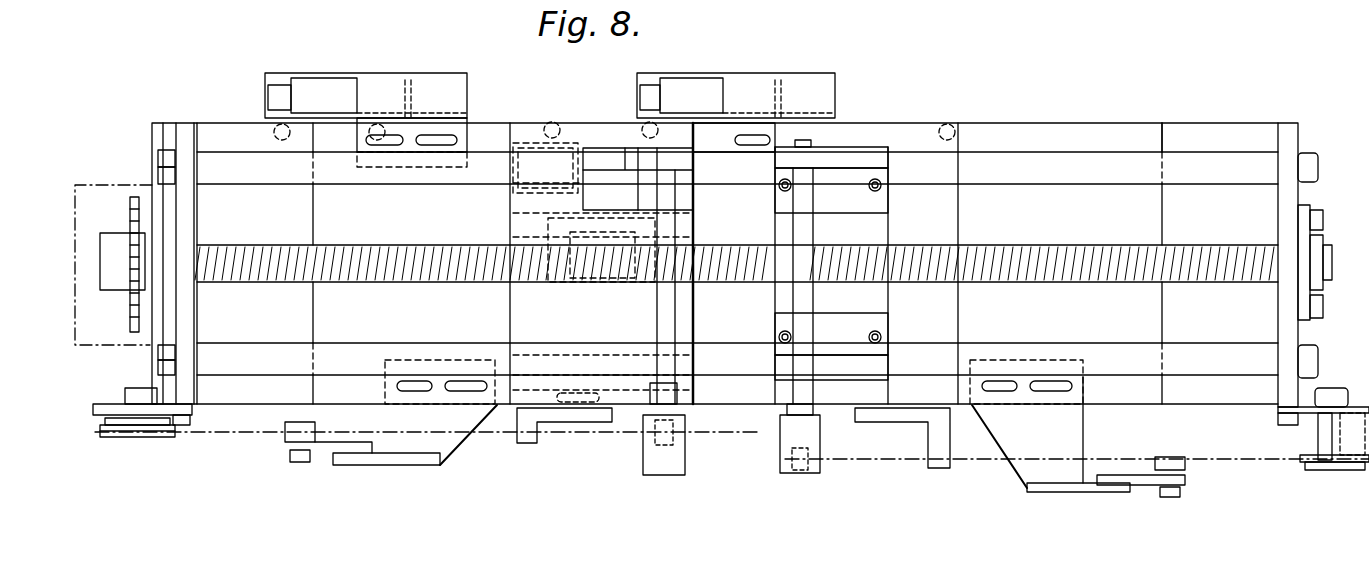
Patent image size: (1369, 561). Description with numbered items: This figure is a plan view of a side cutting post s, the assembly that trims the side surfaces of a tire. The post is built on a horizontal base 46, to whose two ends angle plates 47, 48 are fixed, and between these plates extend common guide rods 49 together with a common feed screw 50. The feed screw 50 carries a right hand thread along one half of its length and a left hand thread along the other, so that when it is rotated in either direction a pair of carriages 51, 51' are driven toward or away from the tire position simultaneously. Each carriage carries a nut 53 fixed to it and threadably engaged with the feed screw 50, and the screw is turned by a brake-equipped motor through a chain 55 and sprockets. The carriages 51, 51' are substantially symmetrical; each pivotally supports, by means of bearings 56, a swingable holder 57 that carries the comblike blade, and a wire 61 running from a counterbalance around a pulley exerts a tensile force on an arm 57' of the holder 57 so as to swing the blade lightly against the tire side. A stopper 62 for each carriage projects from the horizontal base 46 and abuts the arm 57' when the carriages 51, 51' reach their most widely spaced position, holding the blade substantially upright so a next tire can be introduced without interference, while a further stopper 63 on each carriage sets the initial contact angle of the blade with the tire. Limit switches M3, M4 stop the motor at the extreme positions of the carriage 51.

The horizontal base 46 is at (1110, 135).
The angle plate 47 is at (222, 132).
The angle plate 48 is at (1220, 132).
The common guide rods 49 is at (1214, 178).
The common feed screw 50 is at (1078, 248).
The carriage 51 is at (578, 263).
The carriage 51' is at (957, 263).
The nut 53 is at (575, 293).
The chain 55 is at (134, 332).
The bearings 56 is at (822, 160).
The swingable holder 57 is at (731, 442).
The arm 57' is at (836, 474).
The wire 61 is at (226, 432).
The stopper 62 is at (308, 445).
The further stopper 63 is at (527, 432).
The limit switch M3 is at (298, 90).
The limit switch M4 is at (688, 90).
The side cutting post S is at (602, 106).